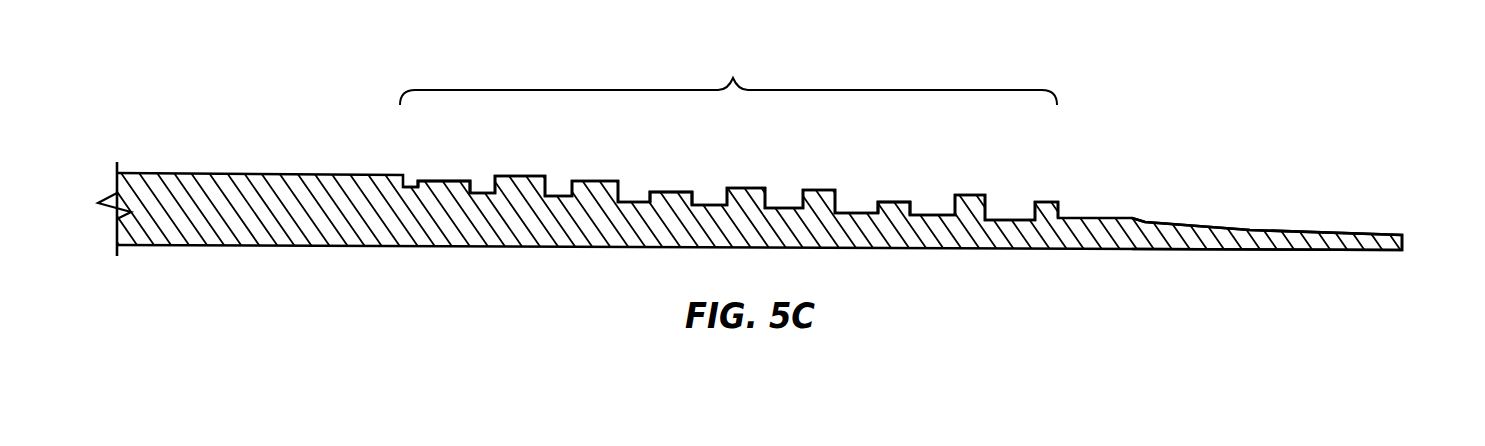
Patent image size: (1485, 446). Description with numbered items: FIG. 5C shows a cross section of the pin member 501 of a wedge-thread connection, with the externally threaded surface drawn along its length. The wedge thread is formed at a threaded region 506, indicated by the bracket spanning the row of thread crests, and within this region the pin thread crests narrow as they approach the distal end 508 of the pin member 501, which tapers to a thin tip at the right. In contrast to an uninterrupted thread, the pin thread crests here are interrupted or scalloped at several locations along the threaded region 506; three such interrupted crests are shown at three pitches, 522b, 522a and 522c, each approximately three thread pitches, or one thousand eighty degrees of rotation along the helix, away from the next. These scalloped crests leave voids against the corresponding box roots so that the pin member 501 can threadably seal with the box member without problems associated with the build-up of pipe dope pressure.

The pin member 501 is at (257, 220).
The threaded region 506 is at (729, 130).
The interrupted pin thread crest 522a is at (670, 192).
The interrupted pin thread crest 522b is at (445, 181).
The interrupted pin thread crest 522c is at (892, 202).
The distal end of pin member 508 is at (1355, 251).